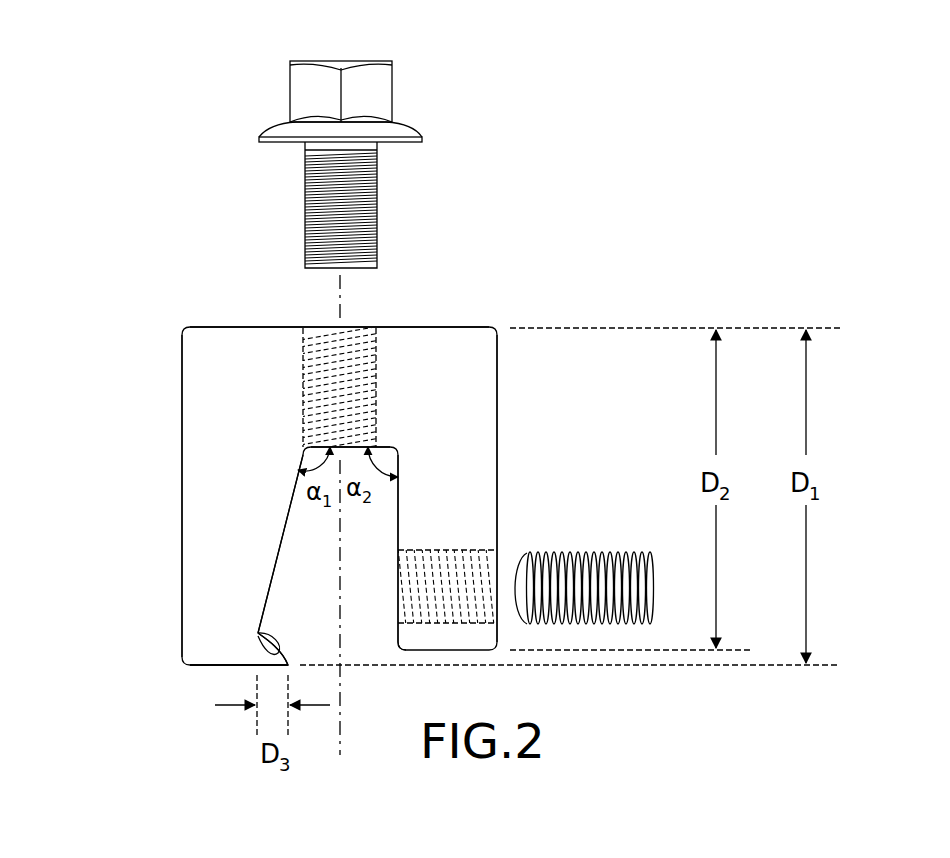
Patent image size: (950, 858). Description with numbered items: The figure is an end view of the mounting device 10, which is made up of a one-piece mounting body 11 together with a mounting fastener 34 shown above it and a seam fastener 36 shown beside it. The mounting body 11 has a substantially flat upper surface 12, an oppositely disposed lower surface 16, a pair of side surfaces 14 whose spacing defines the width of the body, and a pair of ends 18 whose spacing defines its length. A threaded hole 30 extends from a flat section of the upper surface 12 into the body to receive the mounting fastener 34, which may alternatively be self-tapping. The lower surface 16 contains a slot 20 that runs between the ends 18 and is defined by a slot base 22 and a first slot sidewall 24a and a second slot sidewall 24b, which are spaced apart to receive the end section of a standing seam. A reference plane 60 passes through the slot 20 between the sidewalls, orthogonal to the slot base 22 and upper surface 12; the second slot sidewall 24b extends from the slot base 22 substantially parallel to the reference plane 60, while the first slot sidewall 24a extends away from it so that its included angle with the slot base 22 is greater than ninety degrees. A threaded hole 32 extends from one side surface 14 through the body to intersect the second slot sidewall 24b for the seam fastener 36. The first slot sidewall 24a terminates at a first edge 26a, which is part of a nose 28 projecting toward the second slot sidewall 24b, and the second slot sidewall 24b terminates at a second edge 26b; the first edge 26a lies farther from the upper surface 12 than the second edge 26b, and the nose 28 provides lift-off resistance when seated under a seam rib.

The mounting device 10 is at (110, 238).
The mounting body 11 is at (160, 376).
The upper surface 12 is at (412, 328).
The side surfaces 14 is at (182, 457).
The lower surface 16 is at (190, 665).
The ends 18 is at (252, 403).
The slot 20 is at (383, 562).
The slot base 22 is at (345, 447).
The first slot sidewall 24a is at (295, 548).
The second slot sidewall 24b is at (398, 522).
The first edge 26a is at (318, 641).
The second edge 26b is at (400, 650).
The nose 28 is at (258, 633).
The threaded hole 30 is at (303, 370).
The threaded hole 32 is at (447, 557).
The mounting fastener 34 is at (392, 87).
The seam fastener 36 is at (622, 550).
The reference plane 60 is at (340, 600).